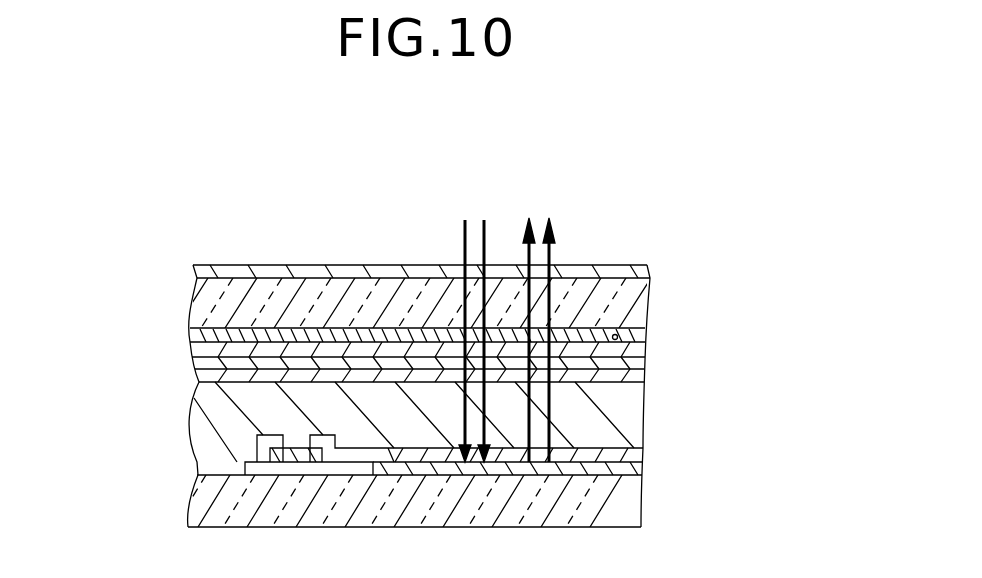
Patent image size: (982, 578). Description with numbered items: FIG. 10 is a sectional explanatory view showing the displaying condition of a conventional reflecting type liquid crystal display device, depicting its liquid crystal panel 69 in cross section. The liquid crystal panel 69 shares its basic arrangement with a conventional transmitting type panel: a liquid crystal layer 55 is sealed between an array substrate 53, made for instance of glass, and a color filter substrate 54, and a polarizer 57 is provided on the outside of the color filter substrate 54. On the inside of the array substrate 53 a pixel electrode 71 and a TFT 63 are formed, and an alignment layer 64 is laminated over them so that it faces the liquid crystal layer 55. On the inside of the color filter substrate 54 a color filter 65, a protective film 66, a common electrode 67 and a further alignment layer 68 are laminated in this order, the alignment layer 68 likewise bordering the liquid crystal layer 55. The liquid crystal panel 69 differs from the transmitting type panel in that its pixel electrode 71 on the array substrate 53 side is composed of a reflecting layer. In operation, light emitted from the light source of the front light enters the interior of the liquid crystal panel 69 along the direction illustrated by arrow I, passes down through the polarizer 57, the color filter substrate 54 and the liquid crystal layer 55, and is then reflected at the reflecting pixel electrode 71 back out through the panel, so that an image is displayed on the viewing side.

The array substrate 53 is at (227, 508).
The color filter substrate 54 is at (225, 312).
The liquid crystal layer 55 is at (242, 445).
The polarizer 57 is at (612, 272).
The TFT 63 is at (242, 428).
The alignment layer 64 is at (623, 453).
The color filter 65 is at (592, 335).
The protective film 66 is at (620, 350).
The common electrode 67 is at (603, 362).
The alignment layer 68 is at (603, 386).
The liquid crystal panel 69 is at (240, 240).
The pixel electrode 71 is at (610, 468).
The arrow I is at (548, 253).